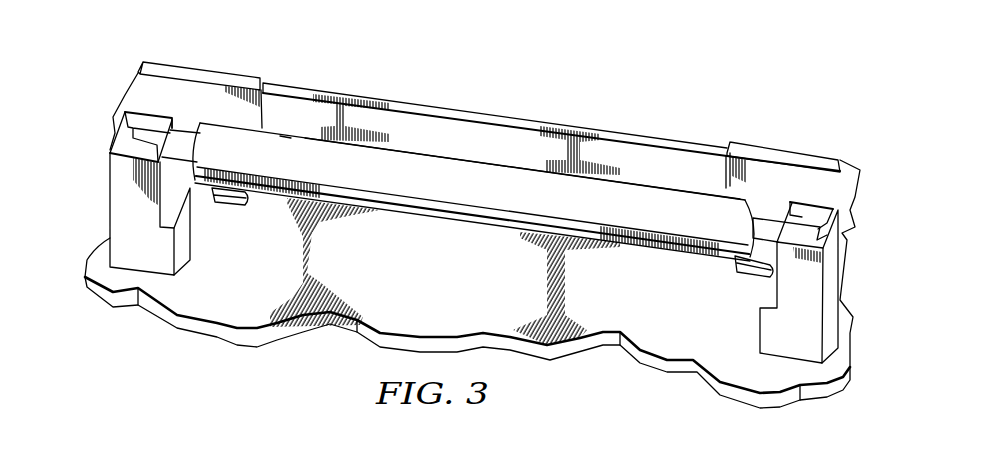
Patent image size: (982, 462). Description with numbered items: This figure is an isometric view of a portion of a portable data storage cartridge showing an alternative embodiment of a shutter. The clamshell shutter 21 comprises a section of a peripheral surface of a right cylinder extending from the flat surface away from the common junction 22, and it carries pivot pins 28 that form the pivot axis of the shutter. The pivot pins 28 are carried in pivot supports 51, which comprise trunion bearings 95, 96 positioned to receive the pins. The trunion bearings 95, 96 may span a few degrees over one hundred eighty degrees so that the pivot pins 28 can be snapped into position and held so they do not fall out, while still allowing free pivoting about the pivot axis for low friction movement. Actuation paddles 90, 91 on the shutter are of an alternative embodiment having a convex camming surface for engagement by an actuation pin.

The clamshell shutter 21 is at (650, 130).
The common junction 22 is at (486, 113).
The pivot pins 28 is at (184, 130).
The pivot supports 51 is at (125, 208).
The actuation paddle 90 is at (227, 206).
The actuation paddle 91 is at (744, 279).
The trunion bearing 95 is at (130, 127).
The trunion bearing 96 is at (823, 204).